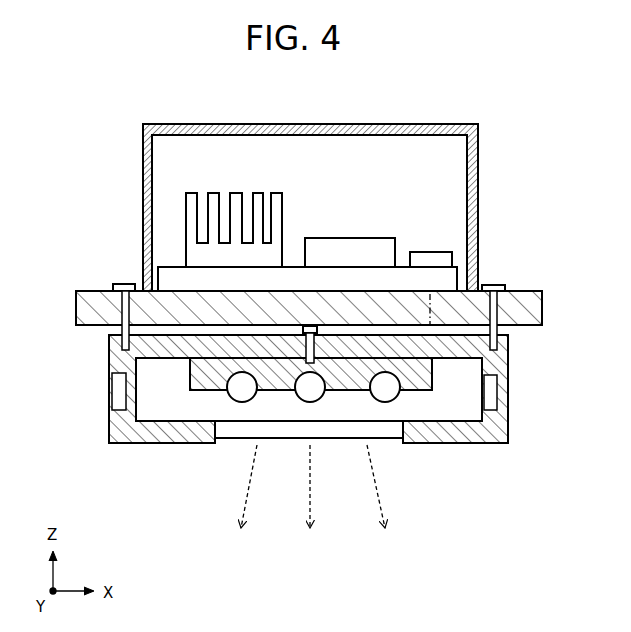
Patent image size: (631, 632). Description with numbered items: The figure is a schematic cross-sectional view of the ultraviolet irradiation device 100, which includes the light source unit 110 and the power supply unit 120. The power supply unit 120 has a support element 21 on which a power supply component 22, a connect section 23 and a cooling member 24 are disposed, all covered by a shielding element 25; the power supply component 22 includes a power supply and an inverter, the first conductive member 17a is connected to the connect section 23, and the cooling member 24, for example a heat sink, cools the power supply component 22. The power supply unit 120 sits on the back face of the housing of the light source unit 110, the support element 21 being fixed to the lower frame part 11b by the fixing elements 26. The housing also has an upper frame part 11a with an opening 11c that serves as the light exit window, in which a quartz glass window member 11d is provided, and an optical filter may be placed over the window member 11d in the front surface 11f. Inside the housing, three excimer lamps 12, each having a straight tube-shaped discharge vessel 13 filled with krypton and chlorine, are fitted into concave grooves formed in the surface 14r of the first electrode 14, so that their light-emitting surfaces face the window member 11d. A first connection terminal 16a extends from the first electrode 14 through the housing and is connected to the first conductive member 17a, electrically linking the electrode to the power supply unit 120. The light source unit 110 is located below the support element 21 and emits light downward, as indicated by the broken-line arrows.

The ultraviolet irradiation device 100 is at (525, 104).
The light source unit 110 is at (90, 433).
The power supply unit 120 is at (126, 155).
The support element 21 is at (85, 309).
The power supply component 22 is at (357, 237).
The connect section 23 is at (432, 252).
The cooling member 24 is at (186, 215).
The shielding element 25 is at (480, 173).
The fixing element 26 is at (117, 283).
The first conductive member 17a is at (377, 326).
The upper frame part 11a is at (510, 422).
The lower frame part 11b is at (508, 358).
The opening 11c is at (230, 437).
The window member 11d is at (393, 440).
The front surface 11f is at (497, 445).
The excimer lamp 12 is at (197, 421).
The discharge vessel 13 is at (392, 396).
The first electrode 14 is at (435, 385).
The surface of the first electrode 14r is at (208, 400).
The first connection terminal 16a is at (122, 388).